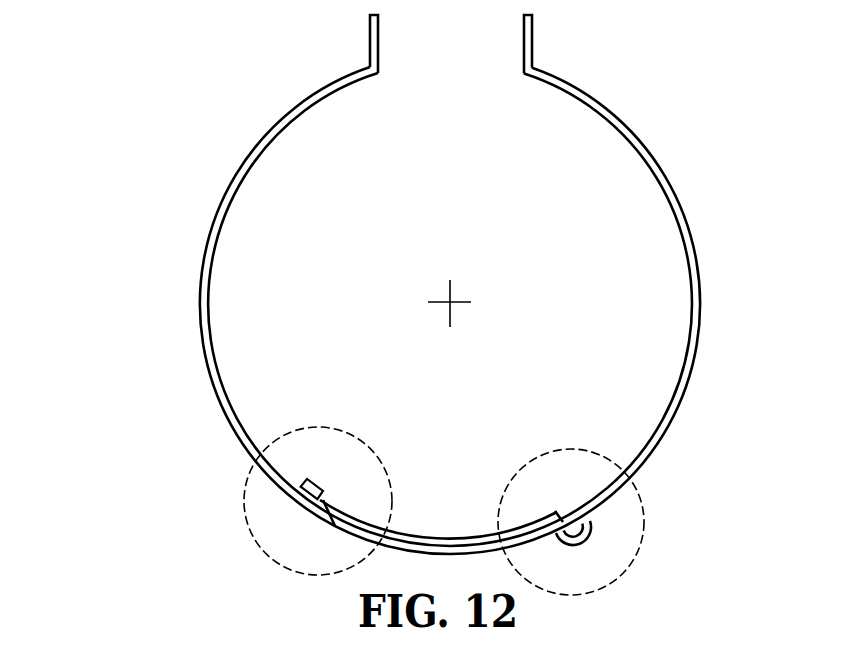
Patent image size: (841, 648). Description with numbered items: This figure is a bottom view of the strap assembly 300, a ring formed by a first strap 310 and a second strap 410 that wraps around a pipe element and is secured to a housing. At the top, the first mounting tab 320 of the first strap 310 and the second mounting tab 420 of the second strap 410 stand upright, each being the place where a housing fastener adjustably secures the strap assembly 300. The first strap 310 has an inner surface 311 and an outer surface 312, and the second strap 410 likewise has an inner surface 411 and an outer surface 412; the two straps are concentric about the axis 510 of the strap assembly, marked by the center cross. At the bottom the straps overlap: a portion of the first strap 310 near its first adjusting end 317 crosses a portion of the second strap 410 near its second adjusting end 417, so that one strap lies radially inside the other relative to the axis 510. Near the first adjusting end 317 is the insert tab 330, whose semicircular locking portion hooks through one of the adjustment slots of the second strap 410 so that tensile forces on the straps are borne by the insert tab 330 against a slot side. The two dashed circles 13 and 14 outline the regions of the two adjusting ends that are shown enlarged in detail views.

The strap assembly 300 is at (174, 137).
The first strap 310 is at (203, 278).
The inner surface of the first strap 311 is at (245, 192).
The outer surface of the first strap 312 is at (208, 378).
The first mounting tab 320 is at (368, 42).
The first adjusting end 317 is at (562, 520).
The insert tab 330 is at (578, 544).
The second strap 410 is at (680, 202).
The inner surface of the second strap 411 is at (665, 405).
The outer surface of the second strap 412 is at (680, 416).
The second mounting tab 420 is at (533, 37).
The second adjusting end 417 is at (306, 476).
The axis 510 is at (452, 300).
The detail region 13 is at (254, 540).
The detail region 14 is at (636, 560).